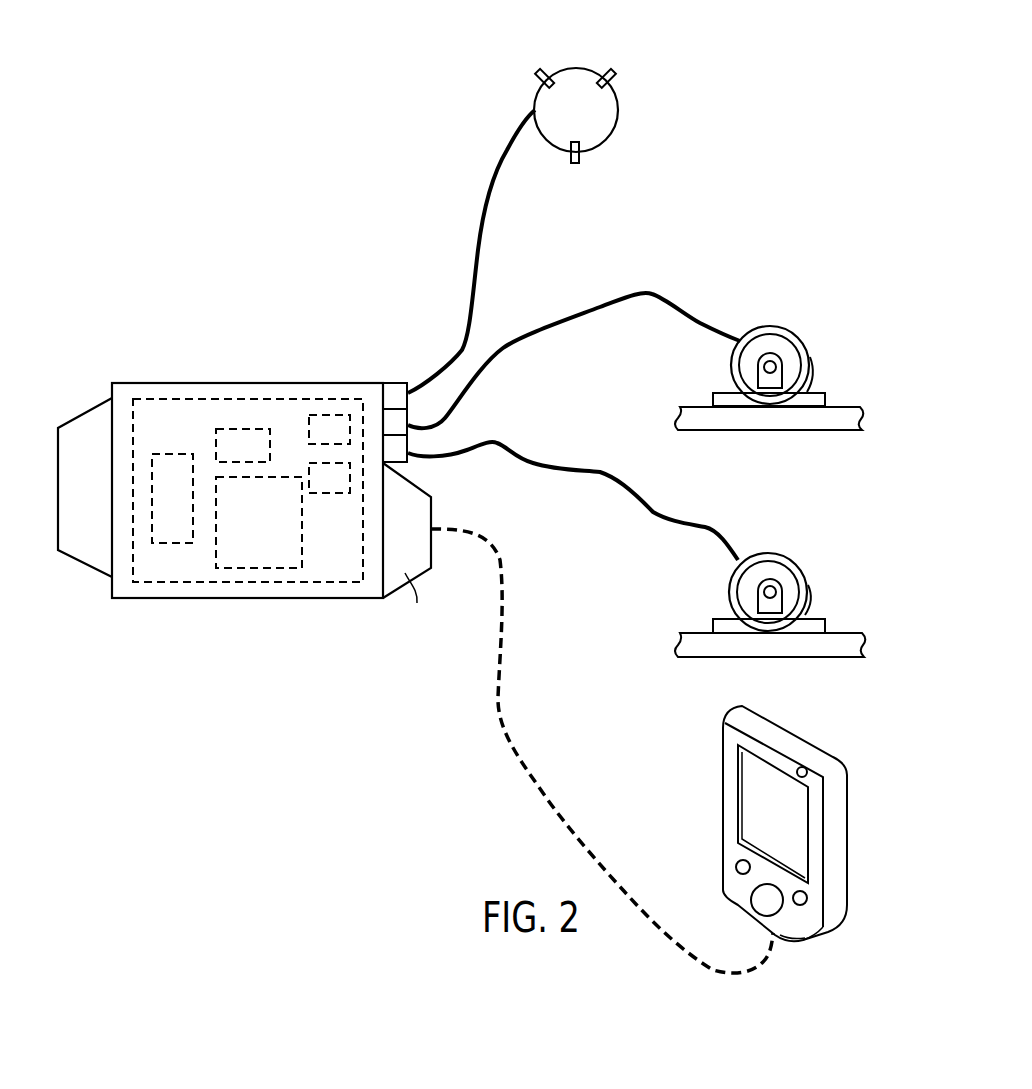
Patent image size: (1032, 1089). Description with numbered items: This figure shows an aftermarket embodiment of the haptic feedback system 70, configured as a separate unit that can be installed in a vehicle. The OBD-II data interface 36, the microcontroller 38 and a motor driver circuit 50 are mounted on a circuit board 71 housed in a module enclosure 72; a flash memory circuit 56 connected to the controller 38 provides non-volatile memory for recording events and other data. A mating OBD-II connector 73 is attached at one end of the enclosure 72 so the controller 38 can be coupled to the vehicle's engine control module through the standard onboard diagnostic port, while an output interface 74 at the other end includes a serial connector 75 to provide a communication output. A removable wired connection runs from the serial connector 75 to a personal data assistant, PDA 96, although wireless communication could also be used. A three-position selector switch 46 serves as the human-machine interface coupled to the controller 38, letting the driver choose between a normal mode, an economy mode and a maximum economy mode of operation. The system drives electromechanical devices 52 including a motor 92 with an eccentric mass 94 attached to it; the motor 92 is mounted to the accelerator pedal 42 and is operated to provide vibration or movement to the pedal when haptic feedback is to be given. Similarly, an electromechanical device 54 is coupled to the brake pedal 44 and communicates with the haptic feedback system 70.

The OBD-II data port interface 36 is at (183, 511).
The haptic feedback controller 38 is at (270, 537).
The accelerator pedal 42 is at (840, 405).
The brake pedal 44 is at (838, 633).
The three-position selector switch 46 is at (575, 68).
The motor driver circuit 50 is at (339, 442).
The electromechanical device 52 is at (788, 310).
The electromechanical device 54 is at (798, 527).
The flash memory circuit 56 is at (253, 457).
The haptic feedback system 70 is at (164, 642).
The circuit board 71 is at (282, 412).
The module enclosure 72 is at (152, 382).
The OBD-II connector 73 is at (83, 415).
The output interface 74 is at (397, 363).
The RS-232C connector 75 is at (432, 502).
The motor 92 is at (807, 345).
The eccentric mass 94 is at (765, 377).
The PDA 96 is at (815, 735).